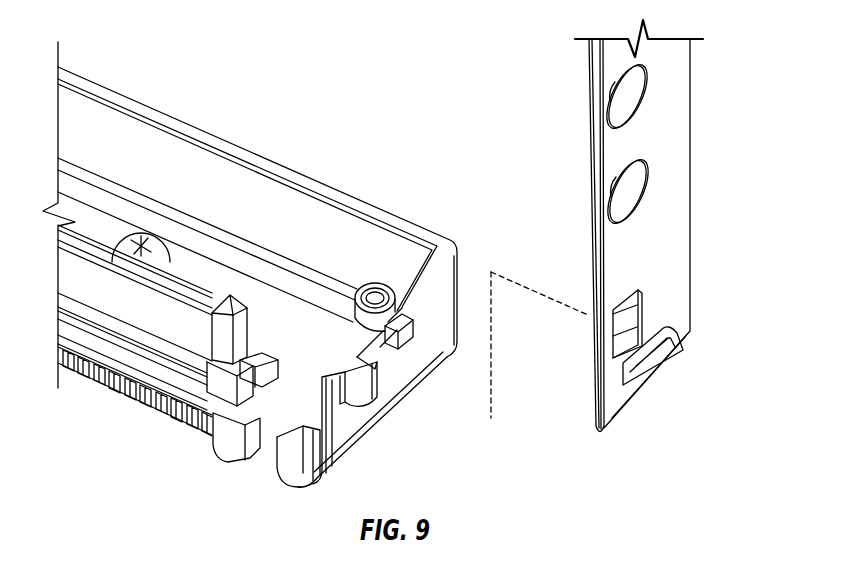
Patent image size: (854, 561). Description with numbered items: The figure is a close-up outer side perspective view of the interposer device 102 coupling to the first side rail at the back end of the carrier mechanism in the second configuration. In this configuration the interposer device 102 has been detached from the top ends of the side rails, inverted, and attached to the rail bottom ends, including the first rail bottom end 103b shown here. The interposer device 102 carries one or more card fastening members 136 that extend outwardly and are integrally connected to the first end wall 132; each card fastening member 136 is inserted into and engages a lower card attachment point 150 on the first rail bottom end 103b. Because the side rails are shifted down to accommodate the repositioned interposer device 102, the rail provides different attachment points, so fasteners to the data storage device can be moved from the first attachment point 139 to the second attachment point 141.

The interposer device 102 is at (291, 154).
The first end wall 132 is at (343, 443).
The card fastening member 136 is at (382, 362).
The first rail bottom end 103b is at (684, 394).
The second attachment point 141 is at (626, 107).
The first attachment point 139 is at (629, 192).
The lower card attachment point 150 is at (643, 312).